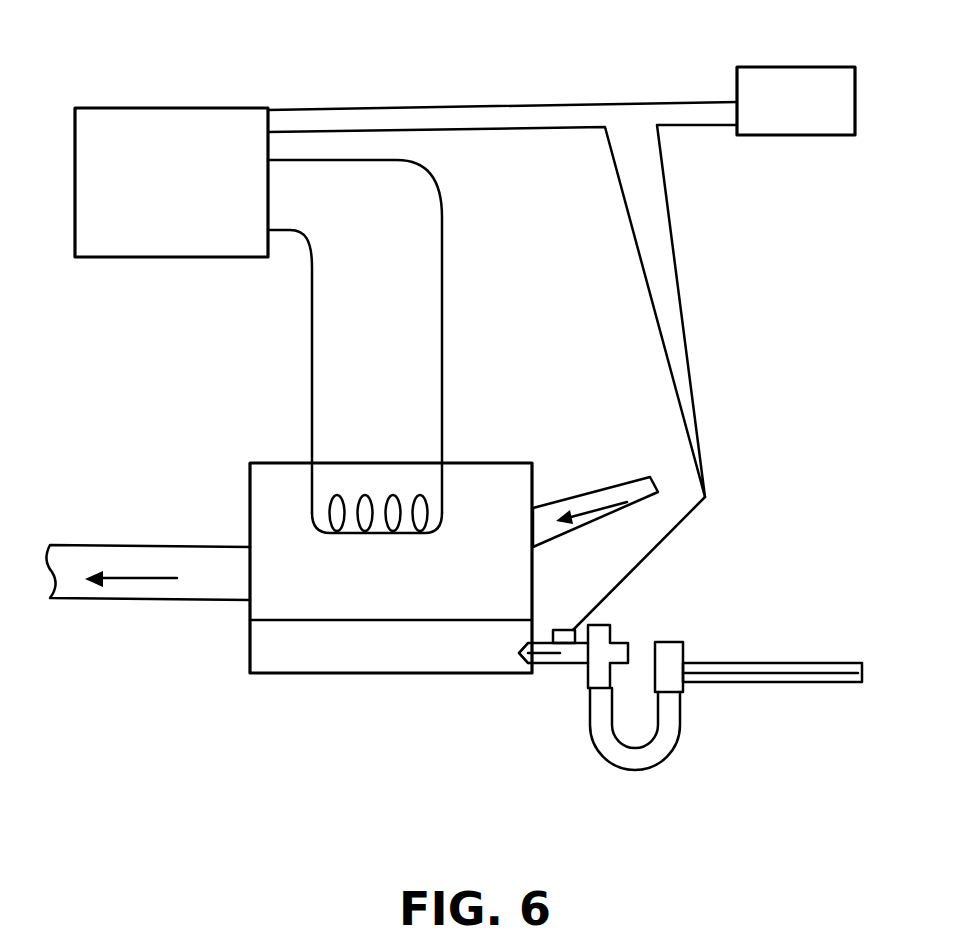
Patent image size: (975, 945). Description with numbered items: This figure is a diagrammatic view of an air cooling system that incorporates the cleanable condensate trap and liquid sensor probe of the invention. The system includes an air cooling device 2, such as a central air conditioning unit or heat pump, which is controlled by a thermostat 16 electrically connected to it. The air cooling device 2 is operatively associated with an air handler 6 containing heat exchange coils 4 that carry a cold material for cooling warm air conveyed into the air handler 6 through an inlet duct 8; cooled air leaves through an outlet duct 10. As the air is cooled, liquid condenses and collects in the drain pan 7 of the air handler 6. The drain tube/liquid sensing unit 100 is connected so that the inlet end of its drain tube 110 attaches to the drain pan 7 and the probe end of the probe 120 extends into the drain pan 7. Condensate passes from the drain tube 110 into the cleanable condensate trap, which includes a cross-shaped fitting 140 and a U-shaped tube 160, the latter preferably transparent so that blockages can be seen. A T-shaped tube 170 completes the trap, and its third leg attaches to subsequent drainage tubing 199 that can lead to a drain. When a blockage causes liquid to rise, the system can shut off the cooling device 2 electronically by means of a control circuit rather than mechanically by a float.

The air cooling device 2 is at (153, 108).
The thermostat 16 is at (797, 67).
The air handler 6 is at (240, 488).
The drain pan 7 is at (250, 653).
The heat exchange coils 4 is at (383, 497).
The outlet duct 10 is at (85, 557).
The inlet duct 8 is at (602, 488).
The drain tube/liquid sensing unit 100 is at (568, 613).
The drain tube 110 is at (558, 670).
The probe 120 is at (518, 673).
The cross-shaped fitting 140 is at (610, 640).
The U-shaped tube 160 is at (673, 747).
The T-shaped tube 170 is at (690, 660).
The drainage tubing 199 is at (800, 662).